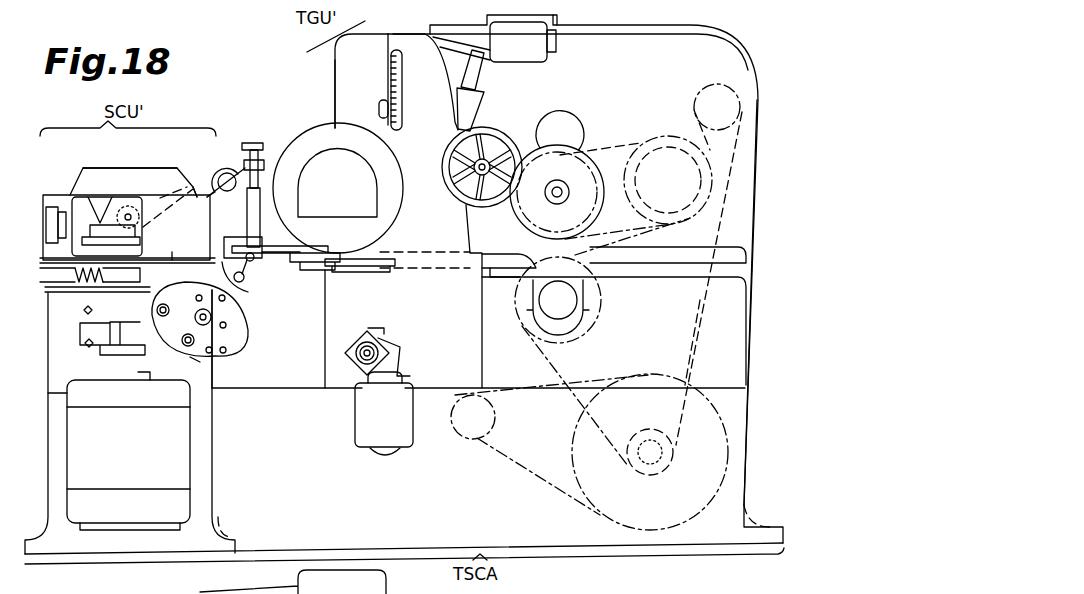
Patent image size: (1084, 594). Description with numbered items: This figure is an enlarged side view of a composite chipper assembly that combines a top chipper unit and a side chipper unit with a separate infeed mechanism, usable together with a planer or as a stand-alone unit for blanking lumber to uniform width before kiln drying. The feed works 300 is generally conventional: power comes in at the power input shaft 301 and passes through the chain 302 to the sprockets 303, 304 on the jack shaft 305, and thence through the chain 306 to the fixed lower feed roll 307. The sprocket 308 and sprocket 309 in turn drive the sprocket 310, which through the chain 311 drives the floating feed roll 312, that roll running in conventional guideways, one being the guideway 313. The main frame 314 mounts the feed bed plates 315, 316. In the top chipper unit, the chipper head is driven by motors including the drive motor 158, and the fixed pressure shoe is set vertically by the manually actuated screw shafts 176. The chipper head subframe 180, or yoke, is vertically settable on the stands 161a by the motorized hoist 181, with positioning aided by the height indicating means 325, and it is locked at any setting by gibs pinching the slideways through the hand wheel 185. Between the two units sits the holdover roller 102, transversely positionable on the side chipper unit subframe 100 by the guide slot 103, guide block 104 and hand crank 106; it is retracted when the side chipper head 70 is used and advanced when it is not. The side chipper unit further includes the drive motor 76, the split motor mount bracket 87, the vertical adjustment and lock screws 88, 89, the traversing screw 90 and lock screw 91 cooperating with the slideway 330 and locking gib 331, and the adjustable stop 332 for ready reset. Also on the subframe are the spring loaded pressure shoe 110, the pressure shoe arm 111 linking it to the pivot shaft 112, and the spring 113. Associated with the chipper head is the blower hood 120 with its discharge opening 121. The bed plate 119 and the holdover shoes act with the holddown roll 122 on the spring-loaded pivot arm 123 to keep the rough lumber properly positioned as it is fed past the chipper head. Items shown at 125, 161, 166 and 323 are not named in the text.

The side chipper head 70 is at (83, 170).
The drive motor 76 is at (140, 458).
The split motor mount bracket 87 is at (88, 339).
The vertical adjustment and lock screw 88 is at (84, 312).
The vertical adjustment and lock screw 89 is at (85, 345).
The traversing screw 90 is at (170, 304).
The lock screw 91 is at (186, 337).
The subframe 100 is at (252, 339).
The holdover roller 102 is at (233, 245).
The guide slot 103 is at (232, 268).
The guide block 104 is at (296, 240).
The hand crank 106 is at (285, 275).
The spring loaded pressure shoe 110 is at (204, 200).
The pressure shoe arm 111 is at (172, 260).
The pivot shaft 112 is at (48, 234).
The spring 113 is at (80, 290).
The bed plate 119 is at (244, 300).
The blower hood 120 is at (122, 172).
The discharge opening 121 is at (70, 193).
The holddown roll 122 is at (150, 226).
The pivot arm 123 is at (193, 187).
The roller 125 is at (218, 177).
The drive motor 158 is at (316, 130).
The housing 161 is at (424, 316).
The stand 161a is at (440, 135).
The drum opening 166 is at (352, 184).
The screw shaft 176 is at (286, 152).
The chipper head subframe 180 is at (343, 83).
The motorized hoist 181 is at (358, 428).
The hand wheel 185 is at (456, 200).
The feed works 300 is at (595, 33).
The power input shaft 301 is at (462, 433).
The chain 302 is at (500, 398).
The sprocket 303 is at (578, 470).
The sprocket 304 is at (647, 428).
The jack shaft 305 is at (650, 466).
The chain 306 is at (690, 352).
The fixed lower feed roll 307 is at (595, 285).
The sprocket 308 is at (710, 85).
The sprocket 309 is at (675, 134).
The sprocket 310 is at (640, 150).
The chain 311 is at (618, 153).
The floating feed roll 312 is at (540, 148).
The guideway 313 is at (555, 115).
The main frame 314 is at (742, 326).
The feed bed plate 315 is at (655, 272).
The feed bed plate 316 is at (322, 270).
The motor 323 is at (478, 80).
The height indicating means 325 is at (396, 112).
The slideway 330 is at (195, 360).
The locking gib 331 is at (143, 382).
The adjustable stop 332 is at (208, 322).